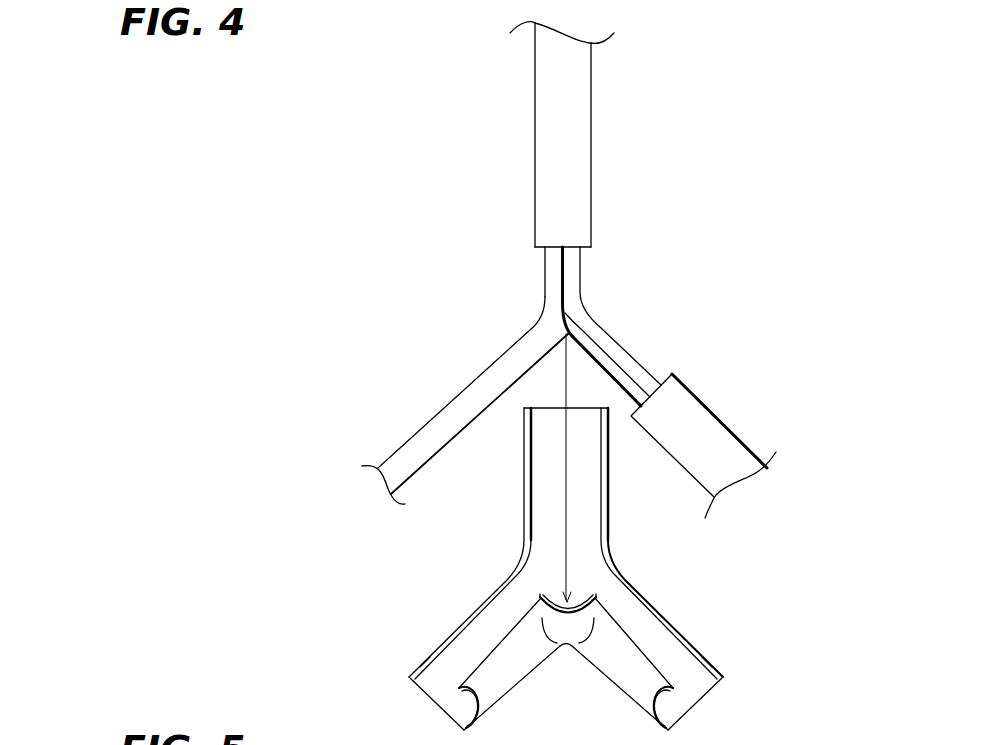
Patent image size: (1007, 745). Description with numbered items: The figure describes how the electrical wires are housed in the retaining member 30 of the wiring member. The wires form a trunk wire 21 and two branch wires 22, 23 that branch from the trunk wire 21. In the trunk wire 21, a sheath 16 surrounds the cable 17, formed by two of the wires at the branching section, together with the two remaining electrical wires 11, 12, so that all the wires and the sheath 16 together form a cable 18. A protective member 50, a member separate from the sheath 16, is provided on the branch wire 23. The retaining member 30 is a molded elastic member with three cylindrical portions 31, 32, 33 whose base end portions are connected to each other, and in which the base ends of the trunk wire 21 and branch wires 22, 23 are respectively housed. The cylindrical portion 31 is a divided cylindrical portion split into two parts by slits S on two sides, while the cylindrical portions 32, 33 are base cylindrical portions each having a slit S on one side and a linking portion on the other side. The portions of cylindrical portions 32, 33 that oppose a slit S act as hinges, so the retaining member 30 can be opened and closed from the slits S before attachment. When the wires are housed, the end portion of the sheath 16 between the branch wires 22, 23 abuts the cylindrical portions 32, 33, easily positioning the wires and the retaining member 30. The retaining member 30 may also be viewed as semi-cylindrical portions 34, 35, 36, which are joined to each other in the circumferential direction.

The trunk wire 21 is at (575, 134).
The sheath 16 is at (592, 217).
The cable 18 is at (535, 218).
The electrical wire 11 is at (575, 282).
The electrical wire 12 is at (553, 285).
The branch wire 23 is at (628, 325).
The branch wire 22 is at (465, 400).
The cable 17 is at (463, 392).
The protective member 50 is at (707, 422).
The retaining member 30 is at (554, 571).
The cylindrical portion 31 is at (610, 447).
The semi-cylindrical portion 36 is at (610, 507).
The semi-cylindrical portion 35 is at (523, 546).
The cylindrical portion 32 is at (488, 703).
The cylindrical portion 33 is at (634, 703).
The semi-cylindrical portion 34 is at (567, 645).
The slit S is at (416, 669).